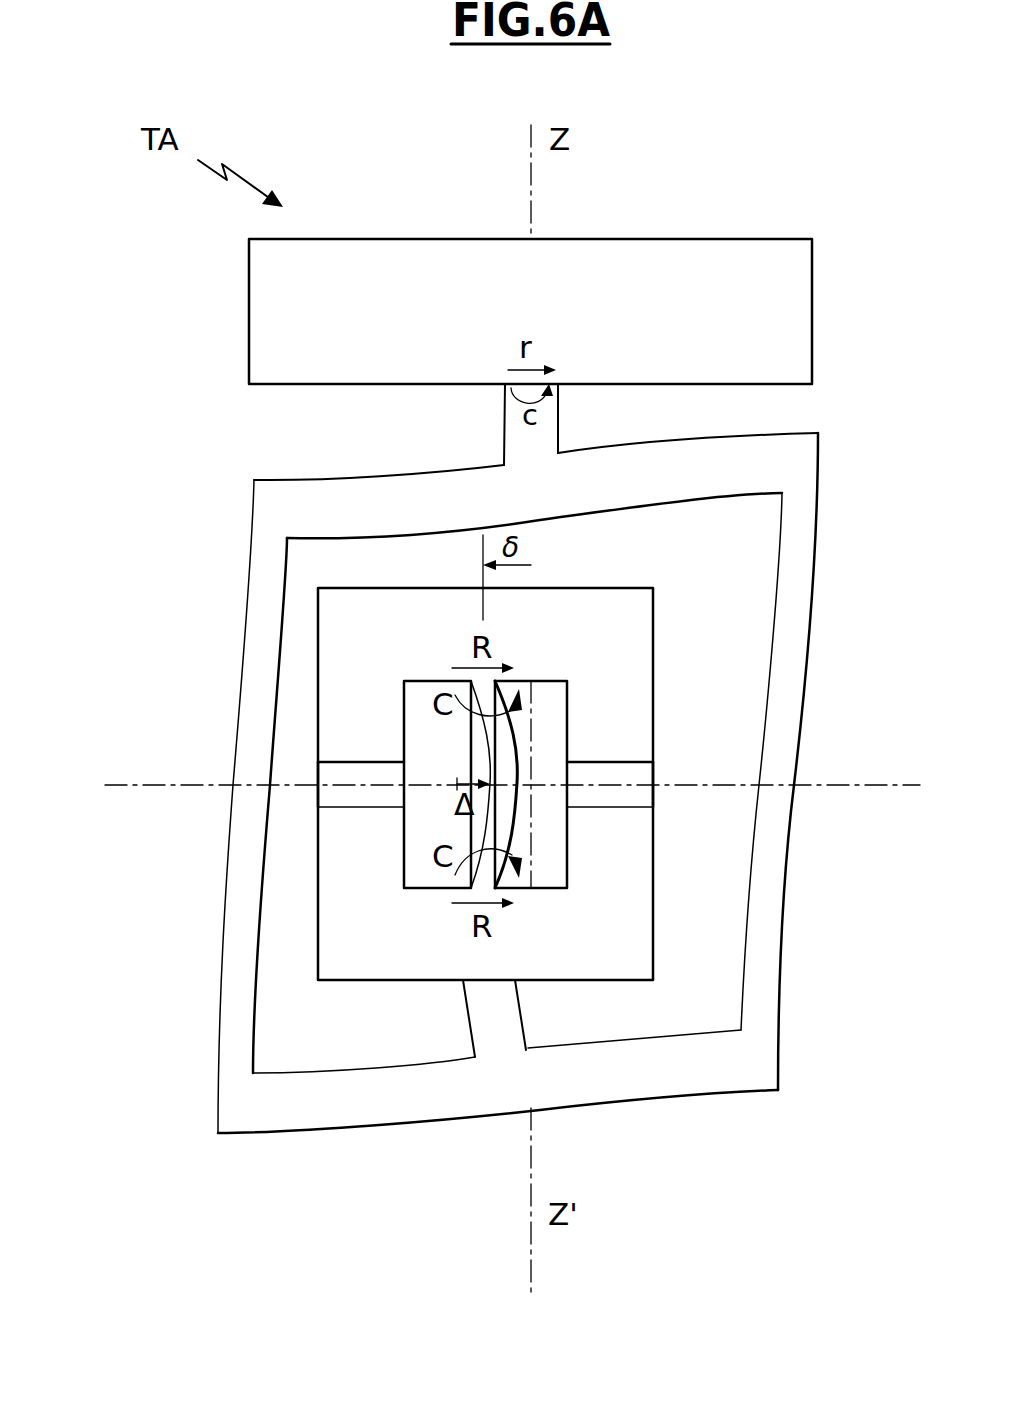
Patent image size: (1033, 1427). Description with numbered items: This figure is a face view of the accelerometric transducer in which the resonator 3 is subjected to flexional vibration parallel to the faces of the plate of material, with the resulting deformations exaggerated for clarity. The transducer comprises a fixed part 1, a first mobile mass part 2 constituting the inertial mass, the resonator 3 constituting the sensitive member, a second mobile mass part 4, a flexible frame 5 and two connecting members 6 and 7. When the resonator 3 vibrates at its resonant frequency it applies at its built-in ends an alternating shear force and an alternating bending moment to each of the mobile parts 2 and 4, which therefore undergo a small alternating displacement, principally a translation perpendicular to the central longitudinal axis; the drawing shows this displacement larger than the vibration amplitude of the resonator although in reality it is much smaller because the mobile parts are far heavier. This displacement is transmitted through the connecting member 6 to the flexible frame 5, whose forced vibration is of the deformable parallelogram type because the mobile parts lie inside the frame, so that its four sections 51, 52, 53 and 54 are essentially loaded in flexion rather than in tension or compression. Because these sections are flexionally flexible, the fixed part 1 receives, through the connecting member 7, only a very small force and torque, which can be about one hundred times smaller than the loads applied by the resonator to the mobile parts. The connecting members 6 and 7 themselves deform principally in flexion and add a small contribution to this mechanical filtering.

The fixed part 1 is at (770, 357).
The first mobile mass part 2 is at (624, 687).
The resonator 3 is at (497, 742).
The second mobile mass part 4 is at (626, 931).
The flexible frame 5 is at (509, 818).
The connecting member 6 is at (475, 1018).
The connecting member 7 is at (545, 446).
The frame section 51 is at (232, 987).
The frame section 52 is at (760, 926).
The frame section 53 is at (417, 1098).
The frame section 54 is at (375, 505).